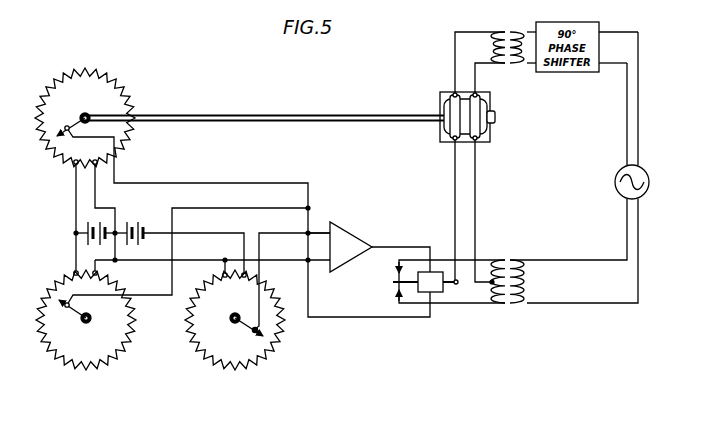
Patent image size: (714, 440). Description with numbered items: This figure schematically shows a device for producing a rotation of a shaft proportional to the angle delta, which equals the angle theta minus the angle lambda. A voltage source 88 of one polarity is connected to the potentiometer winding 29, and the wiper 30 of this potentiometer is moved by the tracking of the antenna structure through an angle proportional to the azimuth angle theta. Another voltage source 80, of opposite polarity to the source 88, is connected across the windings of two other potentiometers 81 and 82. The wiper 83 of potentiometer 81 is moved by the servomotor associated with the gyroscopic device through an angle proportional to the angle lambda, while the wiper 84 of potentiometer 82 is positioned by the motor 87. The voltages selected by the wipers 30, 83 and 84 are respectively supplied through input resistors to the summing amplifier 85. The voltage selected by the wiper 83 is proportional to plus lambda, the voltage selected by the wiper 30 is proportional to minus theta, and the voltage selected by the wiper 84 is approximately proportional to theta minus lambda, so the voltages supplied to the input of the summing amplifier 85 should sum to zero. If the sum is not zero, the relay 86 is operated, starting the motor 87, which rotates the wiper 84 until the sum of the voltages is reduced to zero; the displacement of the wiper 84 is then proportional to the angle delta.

The potentiometer 82 is at (127, 85).
The wiper 84 is at (71, 125).
The voltage source 80 is at (83, 227).
The voltage source 88 is at (131, 225).
The summing amplifier 85 is at (345, 229).
The relay 86 is at (433, 288).
The motor 87 is at (490, 135).
The wiper 83 is at (73, 310).
The potentiometer 81 is at (121, 351).
The wiper 30 is at (258, 334).
The potentiometer winding 29 is at (272, 349).